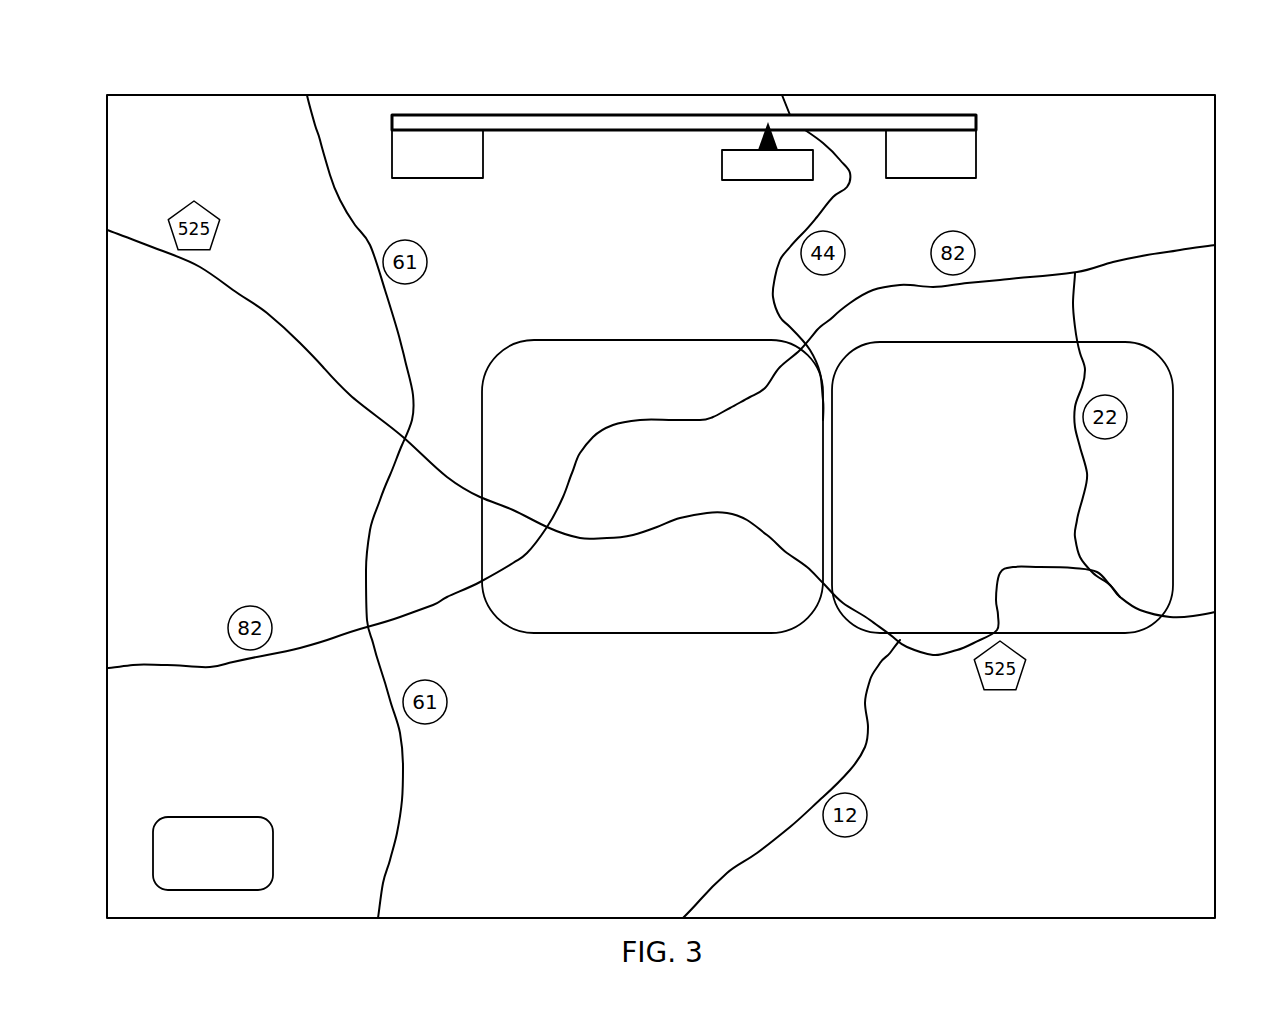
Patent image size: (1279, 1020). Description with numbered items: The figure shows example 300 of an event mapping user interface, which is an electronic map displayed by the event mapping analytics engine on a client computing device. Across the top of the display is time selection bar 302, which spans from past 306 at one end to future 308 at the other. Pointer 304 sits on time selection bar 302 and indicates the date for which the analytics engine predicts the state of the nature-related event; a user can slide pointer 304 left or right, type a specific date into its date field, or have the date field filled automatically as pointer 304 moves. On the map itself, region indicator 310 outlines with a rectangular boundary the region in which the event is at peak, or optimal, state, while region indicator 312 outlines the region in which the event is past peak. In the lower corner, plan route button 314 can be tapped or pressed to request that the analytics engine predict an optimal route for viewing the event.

The example 300 is at (1130, 78).
The time selection bar 302 is at (660, 118).
The pointer 304 is at (722, 161).
The past 306 is at (483, 150).
The future 308 is at (976, 150).
The region indicator 310 is at (652, 633).
The region indicator 312 is at (1132, 633).
The plan route button 314 is at (273, 850).